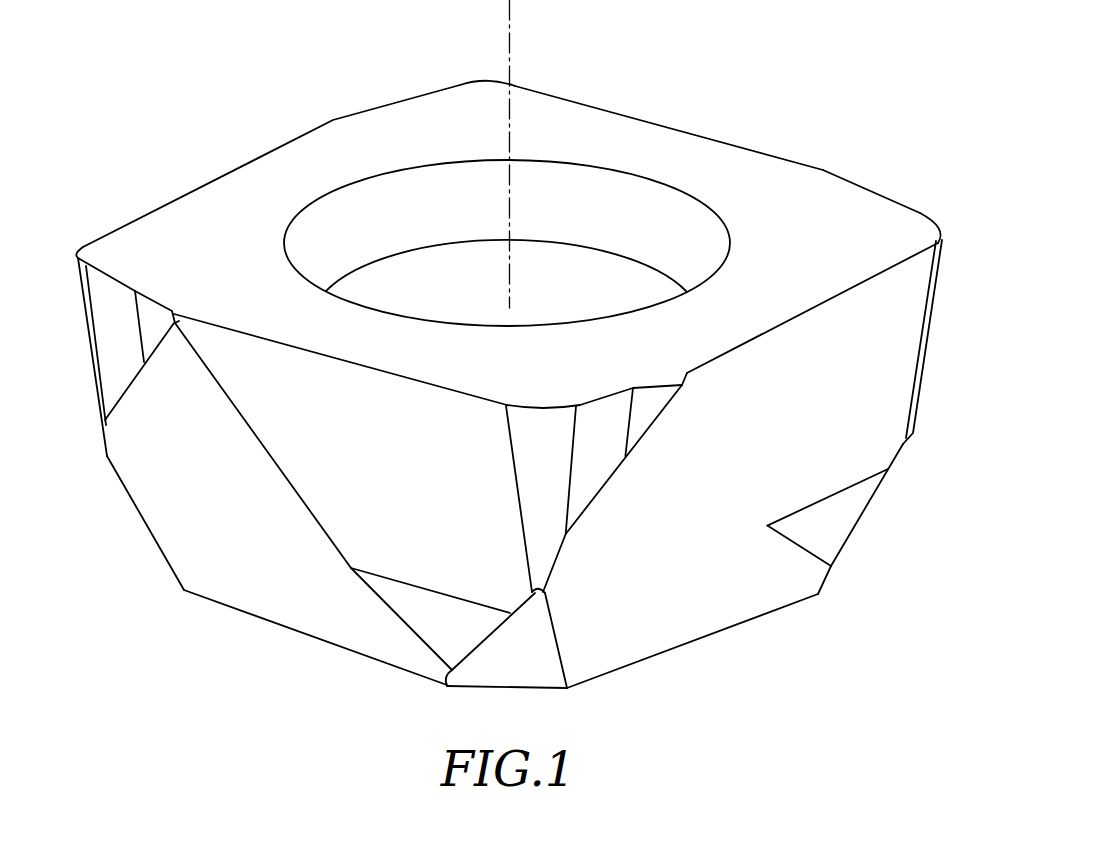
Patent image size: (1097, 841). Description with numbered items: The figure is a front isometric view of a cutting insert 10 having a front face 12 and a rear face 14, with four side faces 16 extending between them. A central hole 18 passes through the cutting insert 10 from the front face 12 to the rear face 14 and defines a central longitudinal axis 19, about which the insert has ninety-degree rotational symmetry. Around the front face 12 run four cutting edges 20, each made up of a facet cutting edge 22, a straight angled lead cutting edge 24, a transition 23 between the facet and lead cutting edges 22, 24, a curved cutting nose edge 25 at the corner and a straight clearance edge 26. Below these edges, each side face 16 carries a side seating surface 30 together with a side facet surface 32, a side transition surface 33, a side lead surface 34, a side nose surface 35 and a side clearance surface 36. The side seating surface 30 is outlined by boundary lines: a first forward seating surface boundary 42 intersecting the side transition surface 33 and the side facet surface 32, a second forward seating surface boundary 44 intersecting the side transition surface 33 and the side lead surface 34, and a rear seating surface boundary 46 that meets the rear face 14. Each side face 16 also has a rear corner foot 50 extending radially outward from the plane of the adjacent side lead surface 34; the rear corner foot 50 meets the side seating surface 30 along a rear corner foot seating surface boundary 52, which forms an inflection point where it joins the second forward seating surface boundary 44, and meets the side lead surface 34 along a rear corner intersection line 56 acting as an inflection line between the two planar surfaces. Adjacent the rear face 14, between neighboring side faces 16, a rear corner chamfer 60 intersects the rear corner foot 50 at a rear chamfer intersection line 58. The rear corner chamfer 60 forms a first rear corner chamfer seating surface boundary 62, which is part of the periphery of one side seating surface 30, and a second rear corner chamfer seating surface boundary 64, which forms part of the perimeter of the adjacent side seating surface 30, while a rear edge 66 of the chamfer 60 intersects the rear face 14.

The cutting insert 10 is at (262, 56).
The front face 12 is at (791, 182).
The rear face 14 is at (221, 604).
The side face 16 is at (302, 482).
The central hole 18 is at (631, 172).
The central longitudinal axis 19 is at (511, 33).
The cutting edge 20 is at (842, 318).
The facet cutting edge 22 is at (866, 188).
The transition 23 is at (683, 371).
The straight angled lead cutting edge 24 is at (812, 302).
The curved cutting nose edge 25 is at (943, 226).
The straight clearance edge 26 is at (908, 207).
The side seating surface 30 is at (186, 456).
The side facet surface 32 is at (165, 324).
The side transition surface 33 is at (172, 321).
The side lead surface 34 is at (777, 347).
The side nose surface 35 is at (923, 326).
The side clearance surface 36 is at (105, 307).
The first forward seating surface boundary 42 is at (160, 338).
The second forward seating surface boundary 44 is at (246, 417).
The rear seating surface boundary 46 is at (205, 595).
The rear corner foot 50 is at (838, 543).
The rear corner foot seating surface boundary 52 is at (386, 605).
The rear corner intersection line 56 is at (433, 588).
The rear chamfer intersection line 58 is at (494, 630).
The rear corner chamfer 60 is at (568, 691).
The first rear corner chamfer seating surface boundary 62 is at (448, 686).
The second rear corner chamfer seating surface boundary 64 is at (144, 520).
The rear edge 66 is at (500, 689).